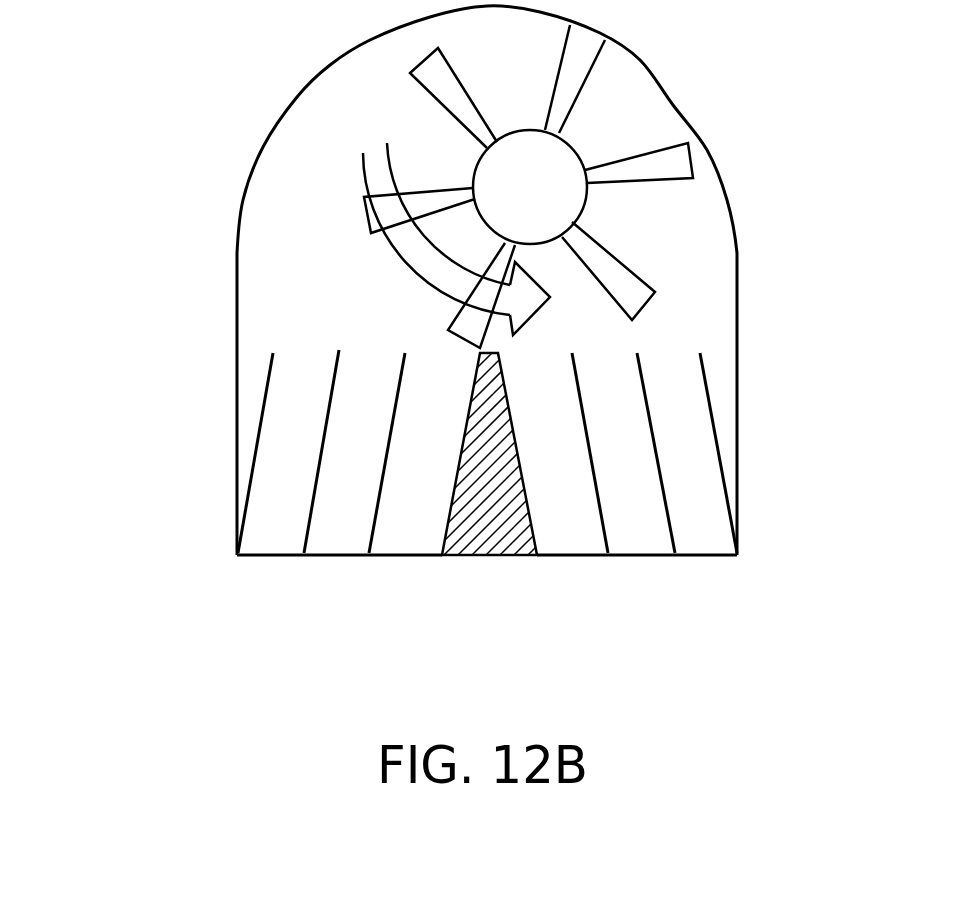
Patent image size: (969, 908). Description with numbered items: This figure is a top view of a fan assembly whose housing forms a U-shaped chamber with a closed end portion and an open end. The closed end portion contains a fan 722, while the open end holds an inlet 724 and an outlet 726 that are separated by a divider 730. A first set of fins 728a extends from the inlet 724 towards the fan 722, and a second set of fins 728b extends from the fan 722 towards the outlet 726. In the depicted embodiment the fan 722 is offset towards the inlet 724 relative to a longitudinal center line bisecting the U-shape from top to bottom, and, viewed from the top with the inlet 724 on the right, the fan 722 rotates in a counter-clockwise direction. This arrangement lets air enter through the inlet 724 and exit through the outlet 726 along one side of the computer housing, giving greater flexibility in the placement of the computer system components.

The fan 722 is at (567, 143).
The inlet 724 is at (638, 560).
The outlet 726 is at (307, 562).
The first set of fins 728a is at (588, 427).
The second set of fins 728b is at (320, 435).
The divider 730 is at (482, 557).